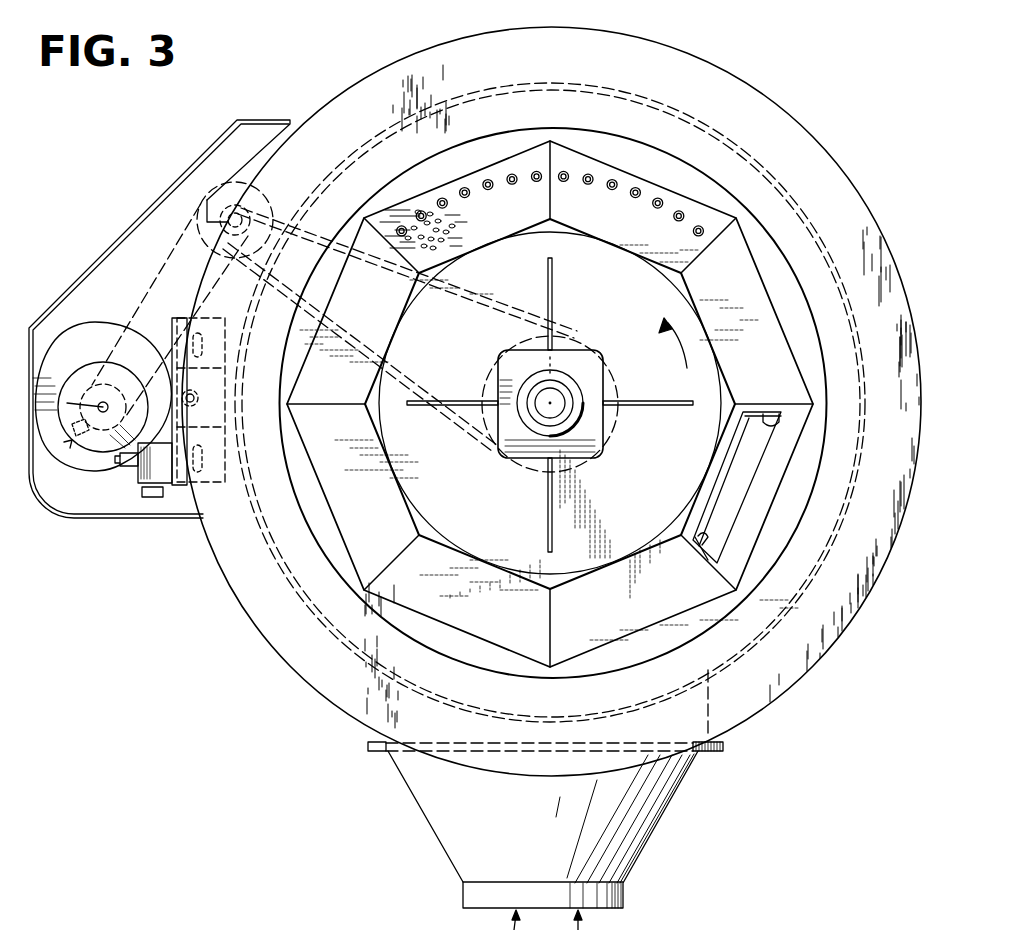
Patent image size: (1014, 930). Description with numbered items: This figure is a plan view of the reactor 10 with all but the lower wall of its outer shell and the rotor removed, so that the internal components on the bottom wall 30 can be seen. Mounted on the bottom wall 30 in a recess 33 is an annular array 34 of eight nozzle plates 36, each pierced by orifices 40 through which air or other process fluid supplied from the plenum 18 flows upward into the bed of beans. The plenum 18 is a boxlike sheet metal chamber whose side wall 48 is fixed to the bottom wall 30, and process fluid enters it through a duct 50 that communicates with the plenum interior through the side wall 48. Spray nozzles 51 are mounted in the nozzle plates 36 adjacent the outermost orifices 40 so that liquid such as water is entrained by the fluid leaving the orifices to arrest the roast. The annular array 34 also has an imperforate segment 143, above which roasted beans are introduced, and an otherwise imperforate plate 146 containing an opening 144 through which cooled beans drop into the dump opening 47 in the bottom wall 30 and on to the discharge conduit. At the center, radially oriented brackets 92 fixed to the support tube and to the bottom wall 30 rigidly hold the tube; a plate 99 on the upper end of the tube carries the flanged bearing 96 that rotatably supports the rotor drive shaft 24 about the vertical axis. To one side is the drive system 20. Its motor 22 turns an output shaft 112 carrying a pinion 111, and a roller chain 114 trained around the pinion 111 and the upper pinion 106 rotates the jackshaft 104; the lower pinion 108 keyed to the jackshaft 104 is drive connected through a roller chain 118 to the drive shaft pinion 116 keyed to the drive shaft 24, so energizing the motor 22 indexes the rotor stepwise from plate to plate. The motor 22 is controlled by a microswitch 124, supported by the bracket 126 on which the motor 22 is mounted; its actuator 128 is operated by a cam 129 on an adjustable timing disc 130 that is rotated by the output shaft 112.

The reactor 10 is at (551, 392).
The plenum 18 is at (742, 657).
The drive system 20 is at (130, 268).
The motor 22 is at (104, 326).
The rotor drive shaft 24 is at (562, 392).
The bottom wall 30 is at (745, 727).
The recess 33 is at (452, 660).
The annular array 34 is at (791, 330).
The nozzle plates 36 is at (469, 175).
The orifices 40 is at (429, 247).
The dump opening 47 is at (694, 549).
The side wall 48 is at (712, 662).
The duct 50 is at (683, 790).
The spray nozzles 51 is at (590, 176).
The radial brackets 92 is at (553, 310).
The flanged bearing 96 is at (582, 431).
The plate 99 is at (523, 459).
The jackshaft 104 is at (206, 232).
The upper pinion 106 is at (263, 185).
The lower pinion 108 is at (212, 190).
The pinion 111 is at (77, 372).
The output shaft 112 is at (67, 442).
The roller chain 114 is at (147, 290).
The drive shaft pinion 116 is at (486, 428).
The roller chain 118 is at (472, 293).
The microswitch 124 is at (148, 487).
The bracket 126 is at (203, 512).
The actuator 128 is at (121, 466).
The cam 129 is at (68, 446).
The adjustable timing disc 130 is at (82, 362).
The imperforate segment 143 is at (766, 290).
The opening 144 is at (777, 412).
The imperforate plate 146 is at (787, 478).